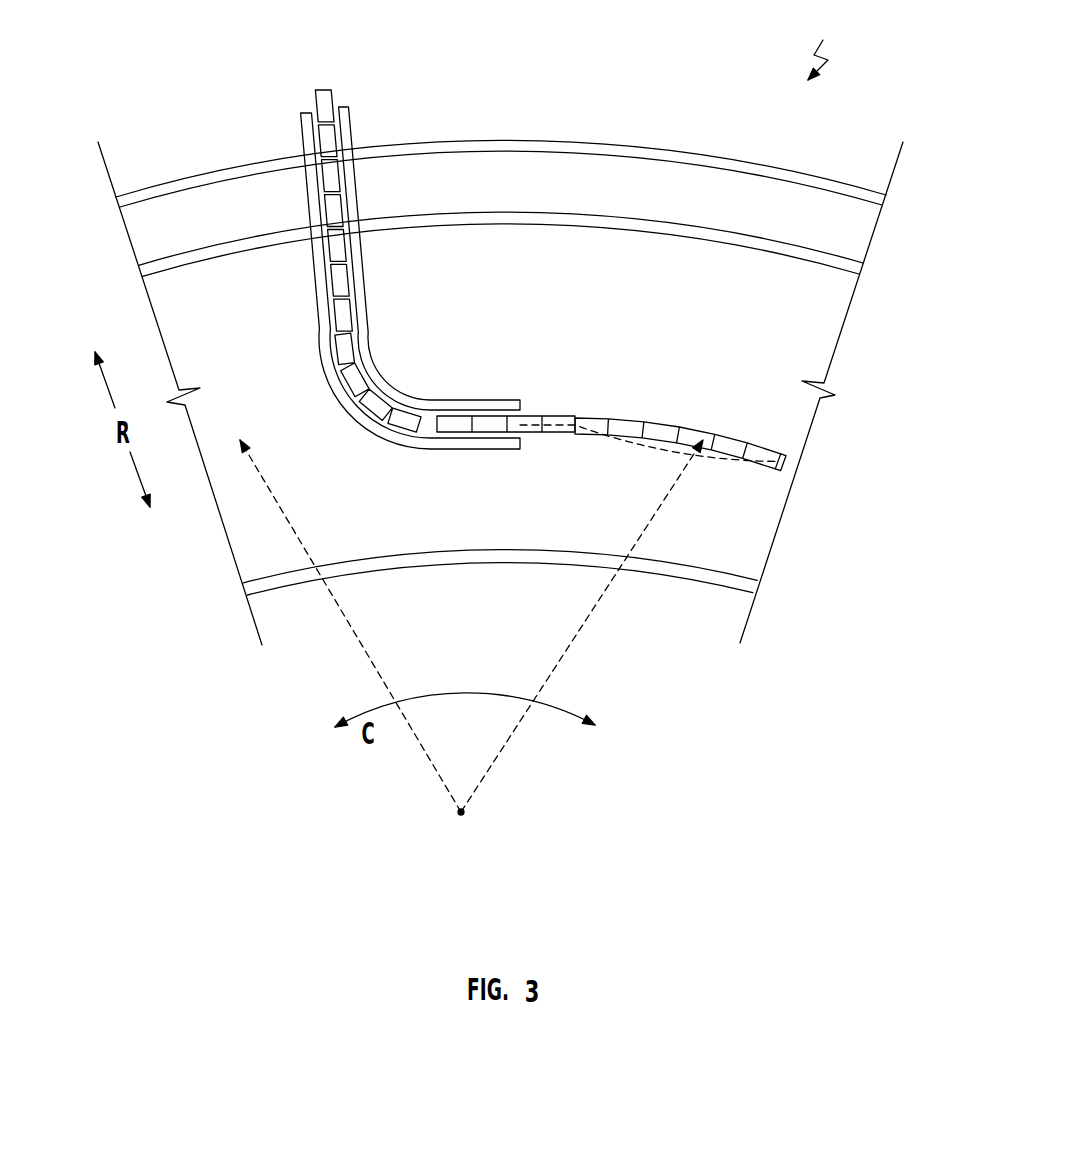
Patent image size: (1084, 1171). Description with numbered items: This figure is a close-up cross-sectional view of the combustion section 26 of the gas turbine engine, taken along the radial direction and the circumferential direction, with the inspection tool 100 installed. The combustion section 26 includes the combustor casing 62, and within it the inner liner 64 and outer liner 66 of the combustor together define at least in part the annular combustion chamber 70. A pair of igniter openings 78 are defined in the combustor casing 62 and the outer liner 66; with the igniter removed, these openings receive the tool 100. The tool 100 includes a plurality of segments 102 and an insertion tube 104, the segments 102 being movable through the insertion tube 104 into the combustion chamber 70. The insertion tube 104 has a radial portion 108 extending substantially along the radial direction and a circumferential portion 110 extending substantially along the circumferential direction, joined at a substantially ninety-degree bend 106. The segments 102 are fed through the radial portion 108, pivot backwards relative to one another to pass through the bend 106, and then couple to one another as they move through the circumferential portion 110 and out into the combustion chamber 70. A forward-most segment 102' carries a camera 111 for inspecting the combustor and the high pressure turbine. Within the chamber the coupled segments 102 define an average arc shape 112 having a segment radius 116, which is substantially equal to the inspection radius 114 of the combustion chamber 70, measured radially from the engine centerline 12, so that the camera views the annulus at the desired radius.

The axial centerline of gas turbine engine 12 is at (460, 817).
The combustion section 26 is at (824, 40).
The combustor casing 62 is at (601, 142).
The inner liner 64 is at (545, 558).
The outer liner 66 is at (722, 232).
The combustion chamber 70 is at (668, 360).
The igniter openings 78 is at (298, 150).
The tool 100 is at (450, 328).
The segments 102 is at (485, 246).
The forward-most segment 102' is at (678, 480).
The insertion tube 104 is at (307, 323).
The bend 106 is at (361, 436).
The radial portion 108 is at (362, 252).
The circumferential portion 110 is at (477, 450).
The camera 111 is at (783, 462).
The average arc shape 112 is at (670, 423).
The inspection radius 114 is at (333, 602).
The segment radius 116 is at (607, 602).